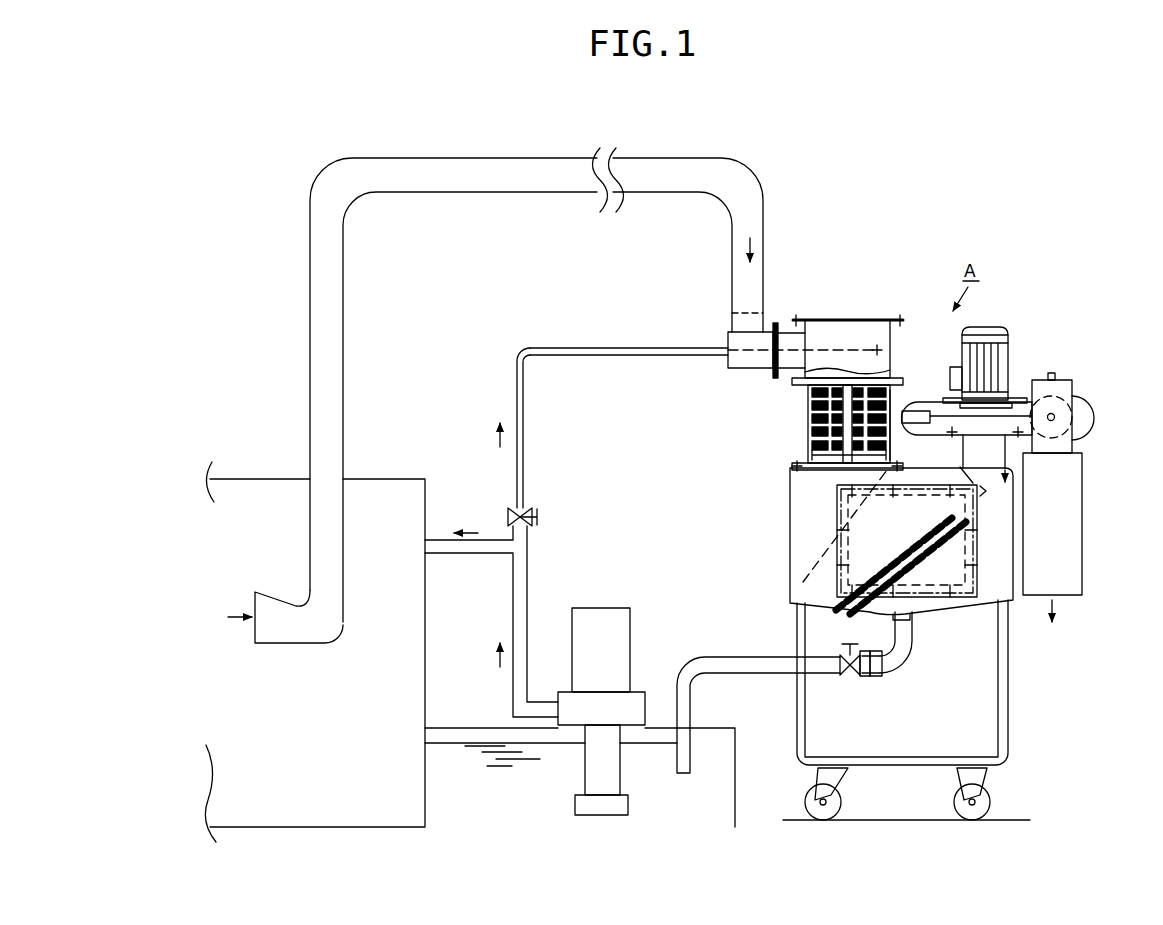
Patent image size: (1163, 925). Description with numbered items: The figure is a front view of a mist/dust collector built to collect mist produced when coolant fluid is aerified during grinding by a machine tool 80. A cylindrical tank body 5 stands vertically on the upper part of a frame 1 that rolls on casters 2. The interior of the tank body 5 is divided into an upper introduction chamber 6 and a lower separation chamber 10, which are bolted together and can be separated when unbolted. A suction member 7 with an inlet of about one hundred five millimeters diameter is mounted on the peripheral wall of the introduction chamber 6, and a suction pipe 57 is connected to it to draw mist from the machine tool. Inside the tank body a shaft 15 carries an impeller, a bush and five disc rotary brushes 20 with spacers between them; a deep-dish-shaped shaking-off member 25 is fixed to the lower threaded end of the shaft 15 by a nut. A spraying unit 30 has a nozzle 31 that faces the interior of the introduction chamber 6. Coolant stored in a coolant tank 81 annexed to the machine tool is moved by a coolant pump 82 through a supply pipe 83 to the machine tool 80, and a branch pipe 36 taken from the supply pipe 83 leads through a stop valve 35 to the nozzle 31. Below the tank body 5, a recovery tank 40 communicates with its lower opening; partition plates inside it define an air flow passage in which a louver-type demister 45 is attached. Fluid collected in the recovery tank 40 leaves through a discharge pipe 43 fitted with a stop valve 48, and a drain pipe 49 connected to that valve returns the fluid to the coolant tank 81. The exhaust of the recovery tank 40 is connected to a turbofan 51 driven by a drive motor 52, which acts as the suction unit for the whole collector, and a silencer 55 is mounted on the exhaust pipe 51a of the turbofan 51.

The frame 1 is at (798, 617).
The casters 2 is at (806, 806).
The tank body 5 is at (795, 429).
The introduction chamber 6 is at (830, 320).
The suction member 7 is at (787, 330).
The separation chamber 10 is at (890, 410).
The shaft 15 is at (806, 420).
The disc rotary brushes 20 is at (806, 432).
The shaking-off member 25 is at (882, 448).
The spraying unit 30 is at (593, 345).
The nozzle 31 is at (877, 345).
The stop valve 35 is at (538, 512).
The branch pipe 36 is at (625, 347).
The recovery tank 40 is at (795, 513).
The discharge pipe 43 is at (905, 645).
The louver-type demister 45 is at (880, 577).
The stop valve 48 is at (853, 676).
The drain pipe 49 is at (738, 662).
The turbofan 51 is at (1010, 404).
The exhaust pipe 51a is at (1072, 385).
The drive motor 52 is at (1005, 330).
The silencer 55 is at (1078, 497).
The suction pipe 57 is at (532, 160).
The machine tool 80 is at (256, 476).
The coolant tank 81 is at (651, 797).
The coolant pump 82 is at (618, 612).
The supply pipe 83 is at (527, 566).